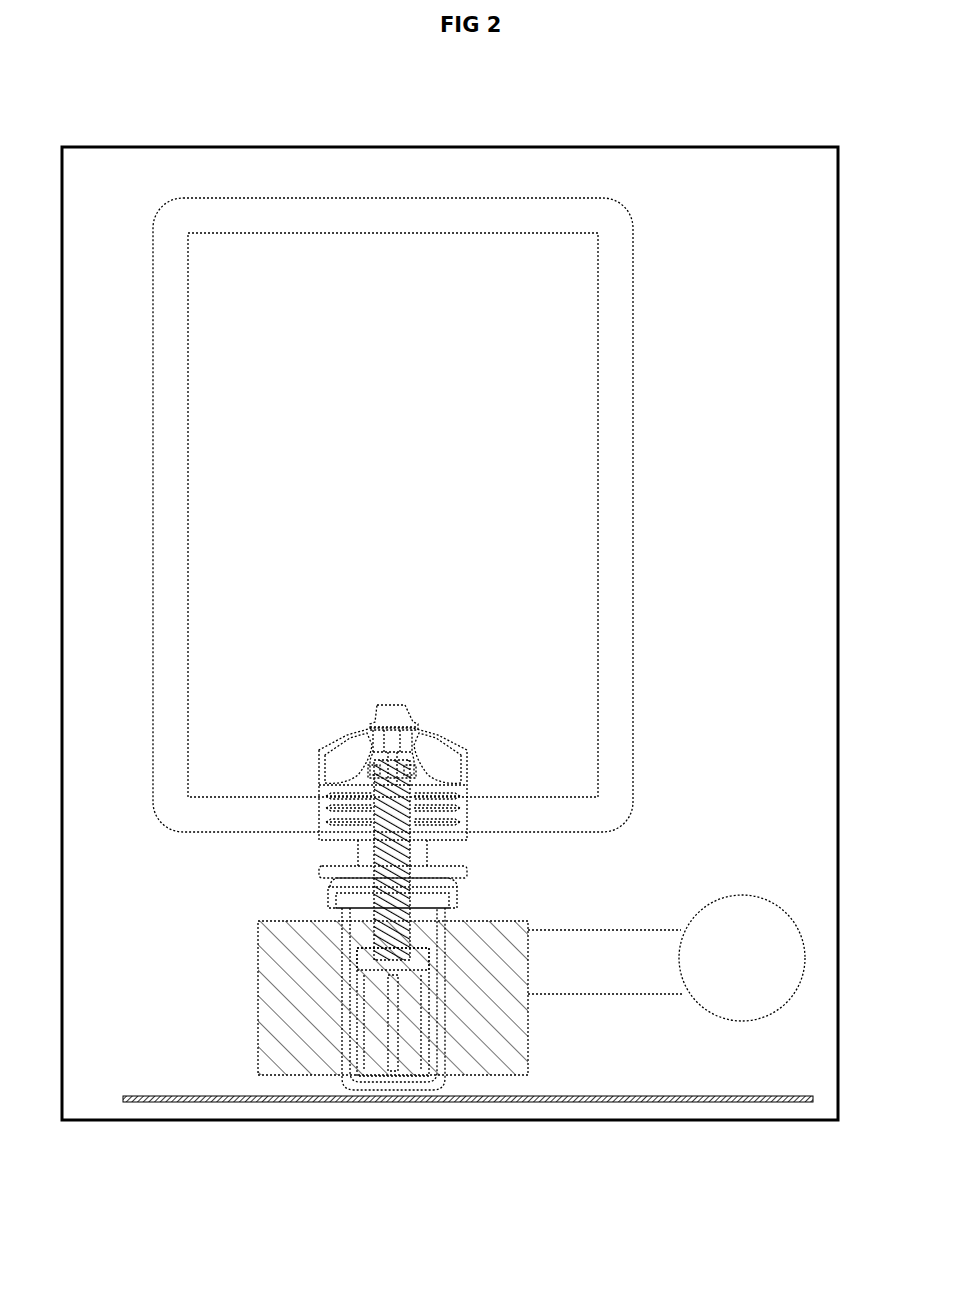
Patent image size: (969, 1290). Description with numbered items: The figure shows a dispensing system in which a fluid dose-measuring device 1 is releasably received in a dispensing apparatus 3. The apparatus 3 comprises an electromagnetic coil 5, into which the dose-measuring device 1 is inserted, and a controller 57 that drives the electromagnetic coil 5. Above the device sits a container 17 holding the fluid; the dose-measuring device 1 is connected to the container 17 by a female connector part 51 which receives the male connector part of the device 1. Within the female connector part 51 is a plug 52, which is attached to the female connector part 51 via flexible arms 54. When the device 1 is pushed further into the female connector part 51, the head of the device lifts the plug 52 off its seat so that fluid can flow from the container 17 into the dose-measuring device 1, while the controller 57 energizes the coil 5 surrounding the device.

The fluid dose-measuring device 1 is at (473, 898).
The dispensing apparatus 3 is at (760, 1122).
The electromagnetic coil 5 is at (258, 963).
The container 17 is at (615, 499).
The female connector part 51 is at (362, 851).
The plug 52 is at (407, 715).
The flexible arms 54 is at (345, 738).
The controller 57 is at (735, 917).